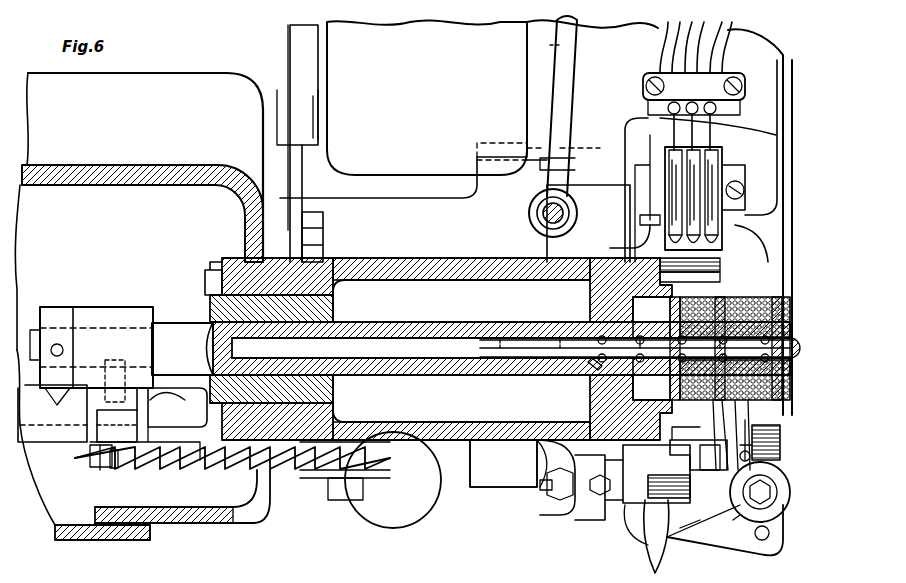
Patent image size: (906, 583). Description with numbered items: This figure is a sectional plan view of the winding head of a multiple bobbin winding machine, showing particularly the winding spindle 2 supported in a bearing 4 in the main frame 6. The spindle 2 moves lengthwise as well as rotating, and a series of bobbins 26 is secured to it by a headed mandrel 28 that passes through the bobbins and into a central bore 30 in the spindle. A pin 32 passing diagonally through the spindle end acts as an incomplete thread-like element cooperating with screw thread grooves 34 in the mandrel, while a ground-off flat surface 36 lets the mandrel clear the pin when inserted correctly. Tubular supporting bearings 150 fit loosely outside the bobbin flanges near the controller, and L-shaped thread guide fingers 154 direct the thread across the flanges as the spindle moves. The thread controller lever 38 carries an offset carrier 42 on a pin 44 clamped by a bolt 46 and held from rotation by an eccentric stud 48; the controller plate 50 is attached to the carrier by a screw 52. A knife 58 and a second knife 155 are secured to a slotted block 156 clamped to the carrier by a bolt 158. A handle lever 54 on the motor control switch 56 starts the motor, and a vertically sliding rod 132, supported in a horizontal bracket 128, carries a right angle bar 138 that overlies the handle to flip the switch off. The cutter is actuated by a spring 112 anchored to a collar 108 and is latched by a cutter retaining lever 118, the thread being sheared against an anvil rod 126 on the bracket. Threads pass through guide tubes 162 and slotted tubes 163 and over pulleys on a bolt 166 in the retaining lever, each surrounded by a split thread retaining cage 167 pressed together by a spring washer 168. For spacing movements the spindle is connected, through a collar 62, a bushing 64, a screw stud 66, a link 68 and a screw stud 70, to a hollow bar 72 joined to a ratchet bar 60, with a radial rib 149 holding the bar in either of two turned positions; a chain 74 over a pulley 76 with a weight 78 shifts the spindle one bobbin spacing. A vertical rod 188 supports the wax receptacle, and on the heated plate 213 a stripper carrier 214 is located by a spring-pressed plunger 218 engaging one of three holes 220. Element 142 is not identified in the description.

The winding spindle 2 is at (471, 348).
The bearing 4 is at (203, 276).
The main frame 6 is at (139, 211).
The bobbins 26 is at (778, 300).
The headed mandrel 28 is at (545, 350).
The central bore 30 is at (380, 343).
The pin 32 is at (592, 365).
The screw thread grooves 34 is at (600, 335).
The flat surface 36 is at (461, 349).
The lever 38 is at (585, 505).
The offset carrier 42 is at (640, 500).
The pin 44 is at (520, 457).
The bolt 46 is at (555, 490).
The stud 48 is at (540, 487).
The removable plate 50 is at (672, 408).
The screw 52 is at (672, 445).
The handle lever 54 is at (577, 42).
The motor control switch 56 is at (438, 141).
The knife 58 is at (612, 407).
The ratchet bar 60 is at (215, 455).
The collar 62 is at (75, 306).
The bushing 64 is at (122, 307).
The screw stud 66 is at (92, 460).
The link 68 is at (97, 440).
The screw stud 70 is at (110, 465).
The hollow bar 72 is at (20, 350).
The chain 74 is at (270, 480).
The pulley 76 is at (320, 480).
The weight 78 is at (393, 480).
The collar 108 is at (773, 451).
The spring 112 is at (773, 440).
The cutter retaining lever 118 is at (648, 206).
The anvil rod 126 is at (743, 243).
The horizontal bracket 128 is at (511, 223).
The vertically sliding rod 132 is at (530, 214).
The right angle bar 138 is at (578, 86).
The lever arm 142 is at (650, 545).
The radial rib 149 is at (177, 407).
The supporting bearings 150 is at (592, 292).
The thread guide fingers 154 is at (720, 262).
The second knife 155 is at (738, 450).
The slotted block 156 is at (712, 470).
The bolt 158 is at (745, 500).
The slotted guide tubes 162 is at (665, 45).
The slotted tubes 163 is at (623, 237).
The bolt 166 is at (738, 180).
The split thread retaining cage 167 is at (725, 145).
The spring washer 168 is at (722, 160).
The vertical rod 188 is at (540, 440).
The plate 213 is at (715, 545).
The carrier 214 is at (695, 530).
The spring-pressed plunger 218 is at (742, 510).
The holes 220 is at (762, 540).